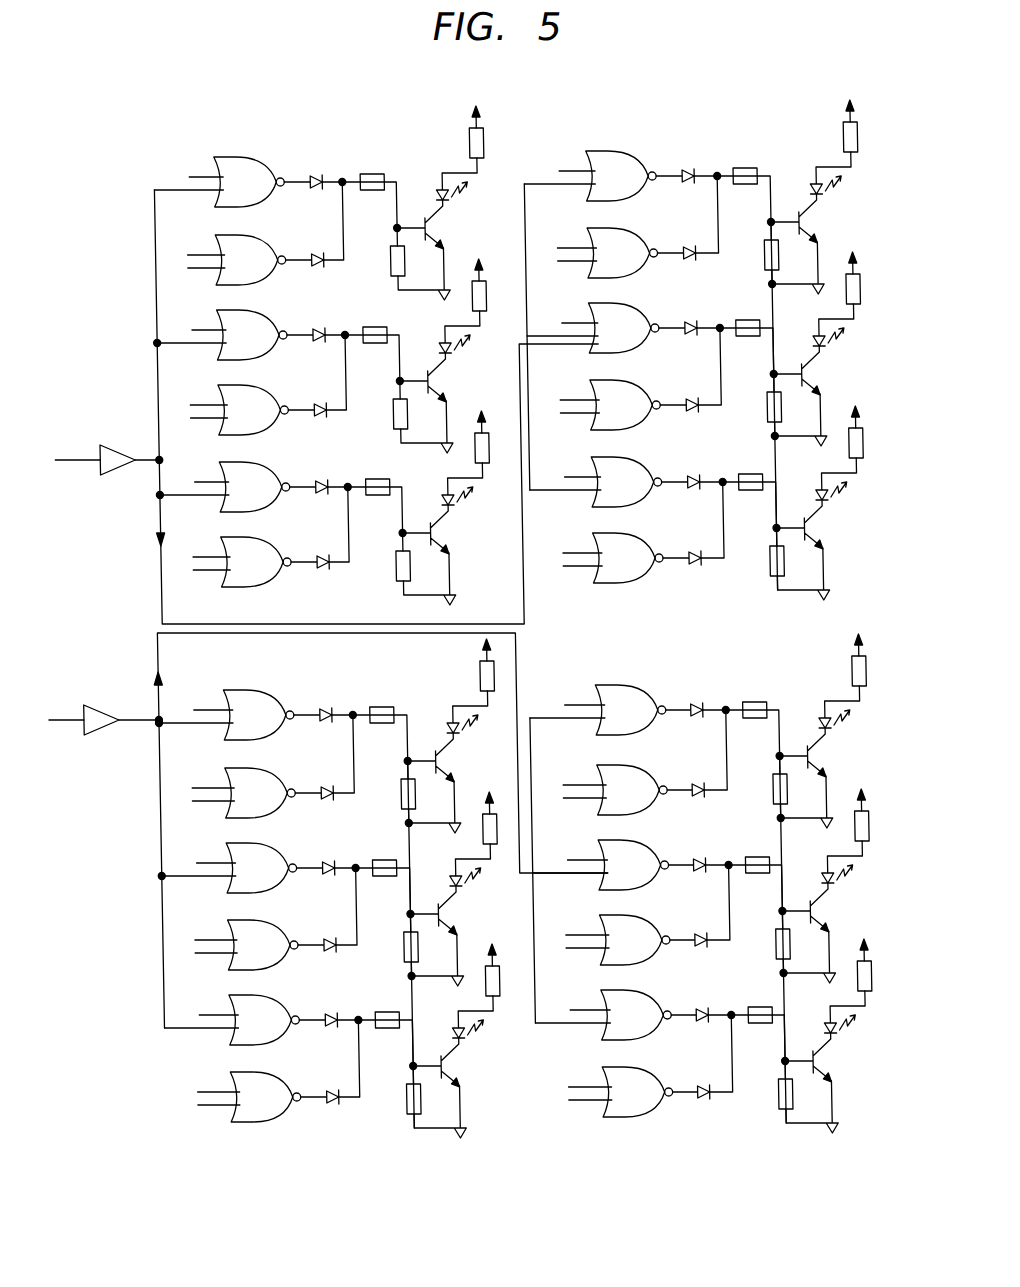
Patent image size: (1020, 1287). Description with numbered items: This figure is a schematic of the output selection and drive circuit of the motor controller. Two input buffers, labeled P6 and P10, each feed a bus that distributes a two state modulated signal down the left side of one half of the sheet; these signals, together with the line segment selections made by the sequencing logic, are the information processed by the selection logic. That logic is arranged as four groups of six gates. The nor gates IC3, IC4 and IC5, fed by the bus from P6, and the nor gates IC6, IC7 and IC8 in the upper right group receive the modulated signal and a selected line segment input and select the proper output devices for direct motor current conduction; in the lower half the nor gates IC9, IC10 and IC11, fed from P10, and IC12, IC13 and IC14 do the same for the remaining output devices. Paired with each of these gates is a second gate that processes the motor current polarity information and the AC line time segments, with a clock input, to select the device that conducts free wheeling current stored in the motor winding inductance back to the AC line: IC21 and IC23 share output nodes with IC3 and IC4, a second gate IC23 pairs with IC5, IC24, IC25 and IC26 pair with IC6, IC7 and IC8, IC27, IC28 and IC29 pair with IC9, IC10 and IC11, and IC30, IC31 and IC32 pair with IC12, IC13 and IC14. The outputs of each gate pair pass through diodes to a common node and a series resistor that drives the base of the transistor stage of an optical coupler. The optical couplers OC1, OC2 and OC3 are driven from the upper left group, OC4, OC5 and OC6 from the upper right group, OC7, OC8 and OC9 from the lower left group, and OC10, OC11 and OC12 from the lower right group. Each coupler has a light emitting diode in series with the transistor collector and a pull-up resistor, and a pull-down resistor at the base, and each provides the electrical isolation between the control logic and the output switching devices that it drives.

The input buffer P6 is at (326, 407).
The input buffer P10 is at (328, 830).
The nor gate IC3 is at (152, 154).
The integrated circuit IC21 is at (156, 231).
The nor gate IC4 is at (152, 307).
The integrated circuit IC23 is at (156, 381).
The nor gate IC5 is at (152, 459).
The nor gate IC6 is at (522, 148).
The integrated circuit IC24 is at (533, 224).
The nor gate IC7 is at (522, 300).
The integrated circuit IC25 is at (533, 376).
The nor gate IC8 is at (522, 454).
The integrated circuit IC26 is at (533, 529).
The nor gate IC9 is at (162, 687).
The integrated circuit IC27 is at (151, 764).
The nor gate IC10 is at (162, 840).
The integrated circuit IC28 is at (151, 916).
The nor gate IC11 is at (162, 992).
The integrated circuit IC29 is at (151, 1068).
The nor gate IC12 is at (525, 682).
The integrated circuit IC30 is at (531, 761).
The nor gate IC13 is at (525, 837).
The integrated circuit IC31 is at (531, 911).
The nor gate IC14 is at (525, 987).
The integrated circuit IC32 is at (531, 1063).
The optical coupler OC1 is at (417, 203).
The optical coupler OC2 is at (420, 356).
The optical coupler OC3 is at (422, 508).
The optical coupler OC4 is at (791, 197).
The optical coupler OC5 is at (794, 349).
The optical coupler OC6 is at (796, 503).
The optical coupler OC7 is at (428, 736).
The optical coupler OC8 is at (430, 889).
The optical coupler OC9 is at (433, 1041).
The optical coupler OC10 is at (805, 731).
The optical coupler OC11 is at (808, 886).
The optical coupler OC12 is at (811, 1036).